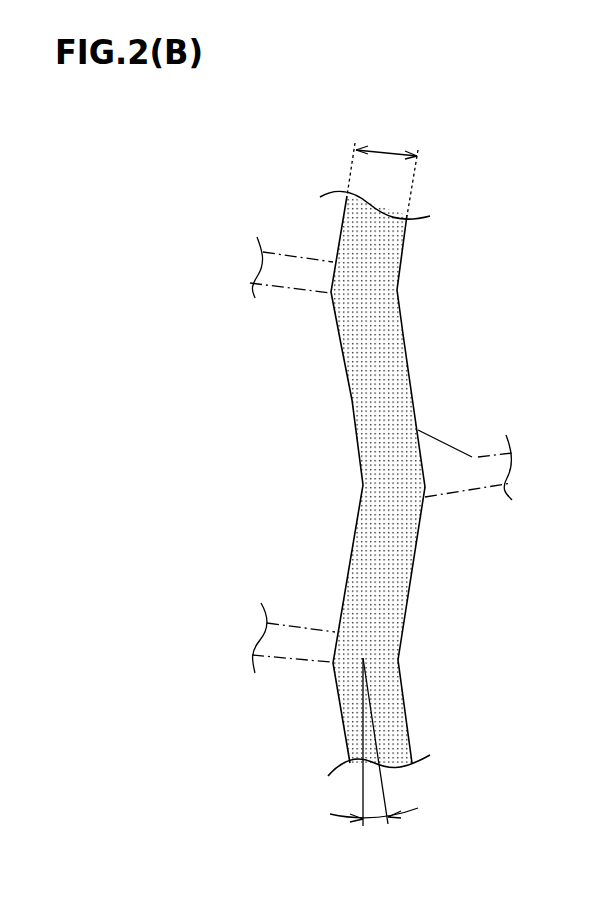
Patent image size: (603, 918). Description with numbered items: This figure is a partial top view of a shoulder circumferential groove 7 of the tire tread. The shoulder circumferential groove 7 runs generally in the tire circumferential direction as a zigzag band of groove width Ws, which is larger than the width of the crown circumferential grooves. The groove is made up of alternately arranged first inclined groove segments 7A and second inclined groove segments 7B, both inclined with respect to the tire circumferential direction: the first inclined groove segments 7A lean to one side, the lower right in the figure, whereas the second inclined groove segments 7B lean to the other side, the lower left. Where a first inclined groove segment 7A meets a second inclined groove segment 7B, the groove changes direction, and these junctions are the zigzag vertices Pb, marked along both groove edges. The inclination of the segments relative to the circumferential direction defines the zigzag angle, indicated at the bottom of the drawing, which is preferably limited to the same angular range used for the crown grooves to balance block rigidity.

The shoulder circumferential groove 7 is at (390, 472).
The first inclined groove segment 7A is at (412, 383).
The second inclined groove segment 7B is at (347, 570).
The zigzag vertex Pb is at (328, 295).
The groove width Ws is at (386, 151).